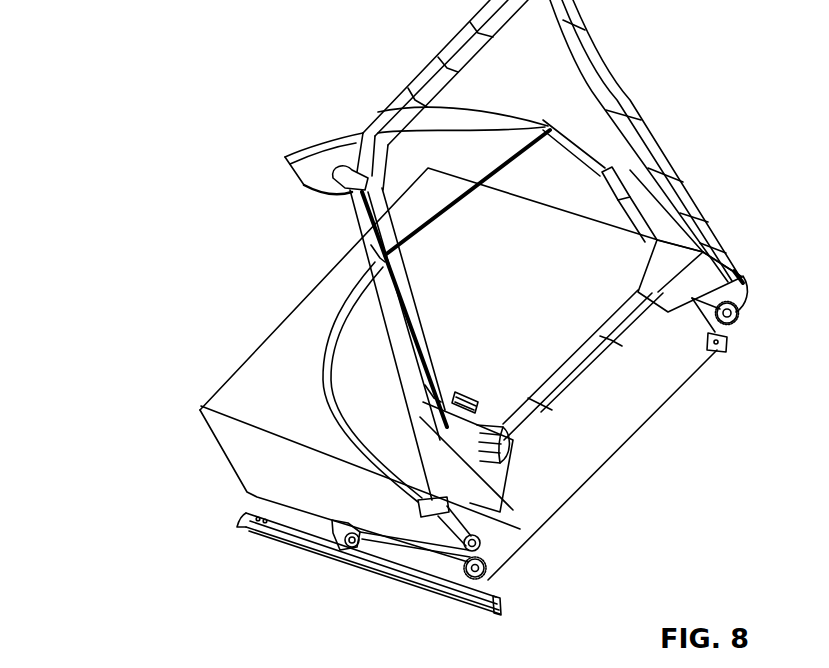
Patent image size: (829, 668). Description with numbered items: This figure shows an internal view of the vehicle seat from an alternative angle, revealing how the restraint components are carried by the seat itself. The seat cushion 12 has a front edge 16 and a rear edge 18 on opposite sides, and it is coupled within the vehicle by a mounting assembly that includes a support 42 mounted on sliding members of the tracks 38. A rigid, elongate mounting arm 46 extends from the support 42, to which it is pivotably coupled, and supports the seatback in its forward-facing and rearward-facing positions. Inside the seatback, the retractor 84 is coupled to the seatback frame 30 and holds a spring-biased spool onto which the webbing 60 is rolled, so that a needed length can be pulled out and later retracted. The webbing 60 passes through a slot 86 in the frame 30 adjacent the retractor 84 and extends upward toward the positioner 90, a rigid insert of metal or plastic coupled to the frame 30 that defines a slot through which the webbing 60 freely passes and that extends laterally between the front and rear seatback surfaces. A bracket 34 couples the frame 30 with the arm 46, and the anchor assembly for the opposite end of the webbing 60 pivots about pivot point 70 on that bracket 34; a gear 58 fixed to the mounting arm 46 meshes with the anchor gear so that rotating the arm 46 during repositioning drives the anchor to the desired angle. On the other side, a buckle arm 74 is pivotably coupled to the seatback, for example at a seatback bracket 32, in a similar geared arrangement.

The seat cushion 12 is at (193, 364).
The front edge 16 is at (263, 338).
The rear edge 18 is at (640, 337).
The seatback frame 30 is at (617, 78).
The seatback bracket 32 is at (733, 270).
The bracket 34 is at (490, 528).
The tracks 38 is at (270, 537).
The support 42 is at (333, 518).
The mounting arm 46 is at (392, 547).
The gear 58 is at (500, 600).
The webbing 60 is at (312, 148).
The pivot point 70 is at (493, 556).
The buckle arm 74 is at (630, 201).
The retractor 84 is at (523, 460).
The slot 86 is at (430, 388).
The positioner 90 is at (350, 162).